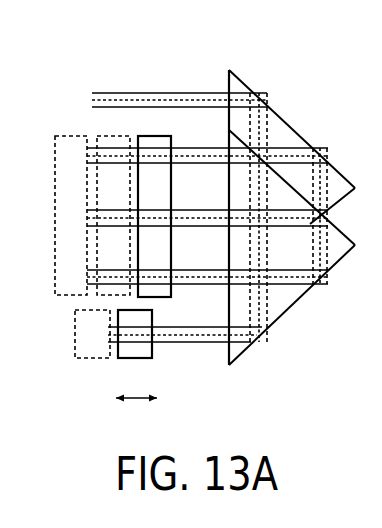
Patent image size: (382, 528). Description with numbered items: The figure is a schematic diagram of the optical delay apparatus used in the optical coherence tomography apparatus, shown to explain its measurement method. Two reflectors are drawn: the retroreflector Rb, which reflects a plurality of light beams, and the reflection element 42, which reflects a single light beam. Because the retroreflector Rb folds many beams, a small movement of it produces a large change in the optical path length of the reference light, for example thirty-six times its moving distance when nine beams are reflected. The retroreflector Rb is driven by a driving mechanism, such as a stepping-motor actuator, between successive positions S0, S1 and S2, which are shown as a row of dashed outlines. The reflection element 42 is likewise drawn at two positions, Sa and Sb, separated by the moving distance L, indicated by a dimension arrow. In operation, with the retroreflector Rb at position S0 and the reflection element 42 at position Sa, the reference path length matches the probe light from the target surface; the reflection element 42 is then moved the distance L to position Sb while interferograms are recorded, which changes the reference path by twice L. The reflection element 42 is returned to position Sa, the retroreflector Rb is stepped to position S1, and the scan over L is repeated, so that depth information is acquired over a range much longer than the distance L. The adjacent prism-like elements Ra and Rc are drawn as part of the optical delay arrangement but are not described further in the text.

The reflection element 42 is at (164, 351).
The prism (reflecting surface a) Ra is at (246, 85).
The retroreflector Rb is at (175, 200).
The prism (reflecting surface c) Rc is at (288, 311).
The position S0 is at (154, 204).
The position S1 is at (113, 203).
The sensor region S2 is at (71, 203).
The position Sa is at (135, 351).
The position Sb is at (92, 351).
The moving distance L is at (136, 415).